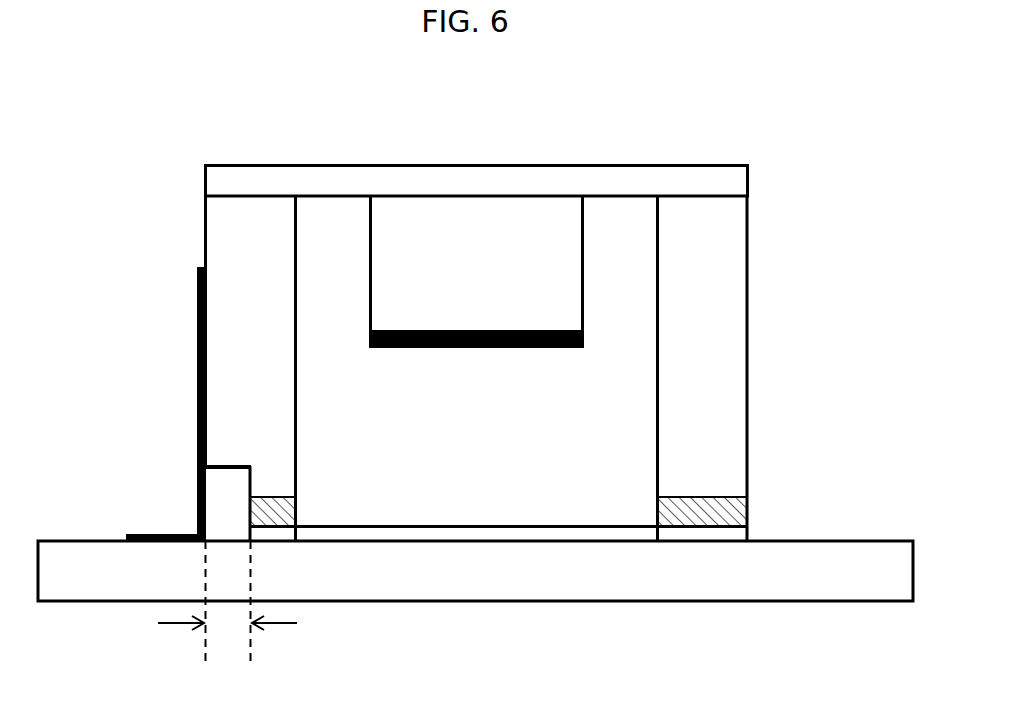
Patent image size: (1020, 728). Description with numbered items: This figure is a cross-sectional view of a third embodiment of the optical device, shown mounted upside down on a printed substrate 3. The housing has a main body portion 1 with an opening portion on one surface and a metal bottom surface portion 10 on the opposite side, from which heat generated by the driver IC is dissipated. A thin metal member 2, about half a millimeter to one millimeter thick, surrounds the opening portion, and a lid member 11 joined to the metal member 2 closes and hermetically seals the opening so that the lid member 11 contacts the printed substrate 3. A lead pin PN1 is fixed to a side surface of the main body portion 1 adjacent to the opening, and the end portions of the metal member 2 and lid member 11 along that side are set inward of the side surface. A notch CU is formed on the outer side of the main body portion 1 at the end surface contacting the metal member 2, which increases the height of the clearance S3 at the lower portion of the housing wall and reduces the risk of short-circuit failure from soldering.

The bottom surface portion 10 is at (703, 182).
The main body portion 1 is at (710, 302).
The lid member 11 is at (567, 533).
The printed substrate 3 is at (808, 570).
The metal member 2 is at (282, 512).
The lead pin PN1 is at (197, 437).
The notch CU is at (235, 465).
The clearance S3 is at (234, 601).